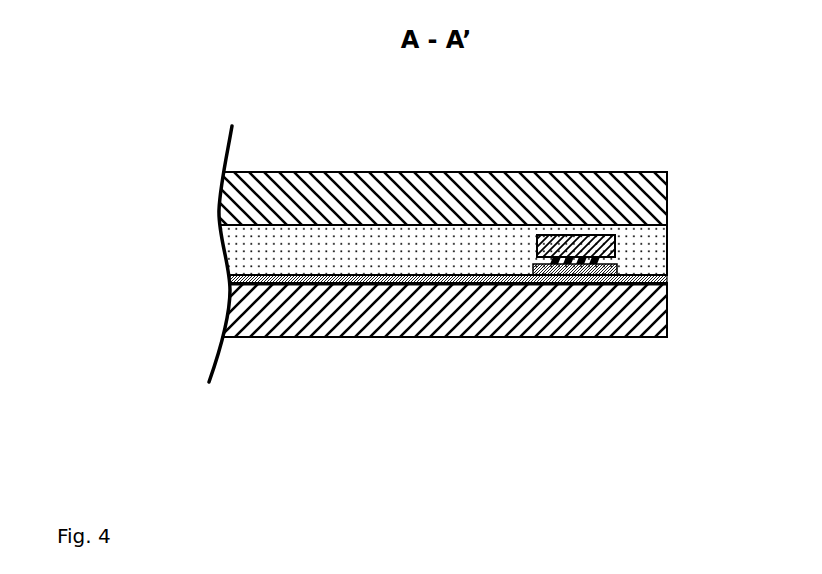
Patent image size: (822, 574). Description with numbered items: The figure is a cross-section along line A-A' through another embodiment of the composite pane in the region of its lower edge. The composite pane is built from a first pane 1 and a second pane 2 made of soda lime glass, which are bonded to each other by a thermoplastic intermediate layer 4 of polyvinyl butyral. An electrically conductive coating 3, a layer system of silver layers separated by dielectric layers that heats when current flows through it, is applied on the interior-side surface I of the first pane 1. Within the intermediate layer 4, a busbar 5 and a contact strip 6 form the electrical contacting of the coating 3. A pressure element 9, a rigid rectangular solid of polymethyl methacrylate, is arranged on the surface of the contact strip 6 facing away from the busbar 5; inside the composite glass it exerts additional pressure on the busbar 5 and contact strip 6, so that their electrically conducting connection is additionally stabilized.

The first pane 1 is at (660, 325).
The second pane 2 is at (646, 190).
The electrically conductive coating 3 is at (408, 282).
The thermoplastic intermediate layer 4 is at (658, 240).
The busbar 5 is at (618, 270).
The contact strip 6 is at (561, 243).
The pressure element 9 is at (615, 247).
The interior-side surface I is at (497, 287).